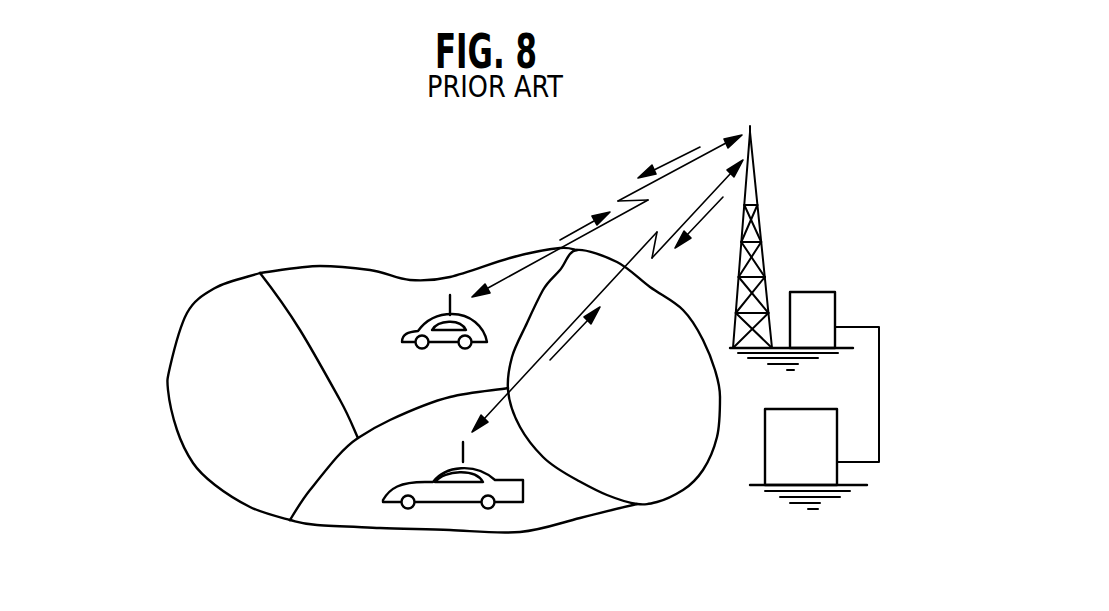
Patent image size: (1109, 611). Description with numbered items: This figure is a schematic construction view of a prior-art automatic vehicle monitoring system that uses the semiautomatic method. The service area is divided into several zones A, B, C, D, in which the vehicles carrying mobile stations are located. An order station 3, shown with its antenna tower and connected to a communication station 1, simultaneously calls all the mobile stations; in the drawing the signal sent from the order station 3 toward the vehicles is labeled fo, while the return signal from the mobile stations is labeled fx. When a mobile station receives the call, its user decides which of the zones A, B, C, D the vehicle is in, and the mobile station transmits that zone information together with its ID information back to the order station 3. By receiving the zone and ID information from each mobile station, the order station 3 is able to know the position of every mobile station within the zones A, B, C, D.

The zone A is at (212, 398).
The zone B is at (360, 297).
The zone C is at (662, 443).
The zone D is at (553, 495).
The communication station 1 is at (785, 463).
The order station 3 is at (780, 318).
The base station frequency signal fo is at (680, 184).
The mobile station frequency signal fx is at (564, 316).